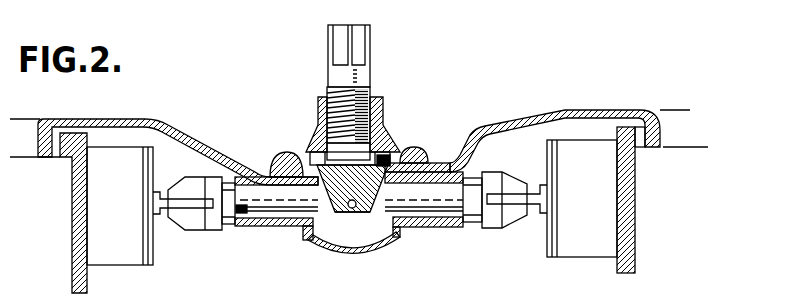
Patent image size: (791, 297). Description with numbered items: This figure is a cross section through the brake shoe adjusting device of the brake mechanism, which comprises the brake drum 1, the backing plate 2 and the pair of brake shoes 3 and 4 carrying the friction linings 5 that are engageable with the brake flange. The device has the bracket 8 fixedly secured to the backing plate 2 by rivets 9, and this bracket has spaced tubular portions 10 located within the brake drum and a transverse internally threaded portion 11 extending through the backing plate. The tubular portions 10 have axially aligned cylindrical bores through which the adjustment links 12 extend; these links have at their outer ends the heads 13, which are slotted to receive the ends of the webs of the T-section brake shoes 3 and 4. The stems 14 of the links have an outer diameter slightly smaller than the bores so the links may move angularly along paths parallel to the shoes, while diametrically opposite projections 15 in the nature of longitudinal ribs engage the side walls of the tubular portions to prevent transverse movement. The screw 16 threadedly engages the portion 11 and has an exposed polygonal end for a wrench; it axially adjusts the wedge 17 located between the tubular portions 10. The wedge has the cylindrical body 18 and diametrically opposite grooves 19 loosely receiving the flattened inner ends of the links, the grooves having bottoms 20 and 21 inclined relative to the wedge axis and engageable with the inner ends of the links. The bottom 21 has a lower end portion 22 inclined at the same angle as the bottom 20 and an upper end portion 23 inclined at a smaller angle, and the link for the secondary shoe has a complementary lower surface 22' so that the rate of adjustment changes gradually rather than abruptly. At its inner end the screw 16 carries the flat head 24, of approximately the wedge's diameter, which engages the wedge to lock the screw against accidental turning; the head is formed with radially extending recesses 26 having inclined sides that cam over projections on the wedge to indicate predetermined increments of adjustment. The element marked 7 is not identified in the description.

The brake drum 1 is at (642, 203).
The backing plate 2 is at (496, 127).
The brake shoe 3 is at (158, 244).
The brake shoe 4 is at (546, 221).
The friction lining 5 is at (106, 250).
The flange 7 is at (303, 228).
The bracket 8 is at (392, 145).
The rivet 9 is at (289, 158).
The tubular portion 10 is at (253, 224).
The internally threaded portion 11 is at (381, 106).
The adjustment link 12 is at (230, 221).
The head 13 is at (217, 188).
The stem 14 is at (258, 197).
The projection 15 is at (272, 224).
The screw 16 is at (338, 92).
The wedge 17 is at (347, 215).
The cylindrical body 18 is at (366, 216).
The groove 19 is at (380, 195).
The groove bottom 20 is at (322, 188).
The groove bottom 21 is at (440, 164).
The lower end portion 22 is at (354, 245).
The lower surface 22' is at (411, 240).
The upper end portion 23 is at (393, 160).
The flat head 24 is at (318, 150).
The recess 26 is at (330, 122).